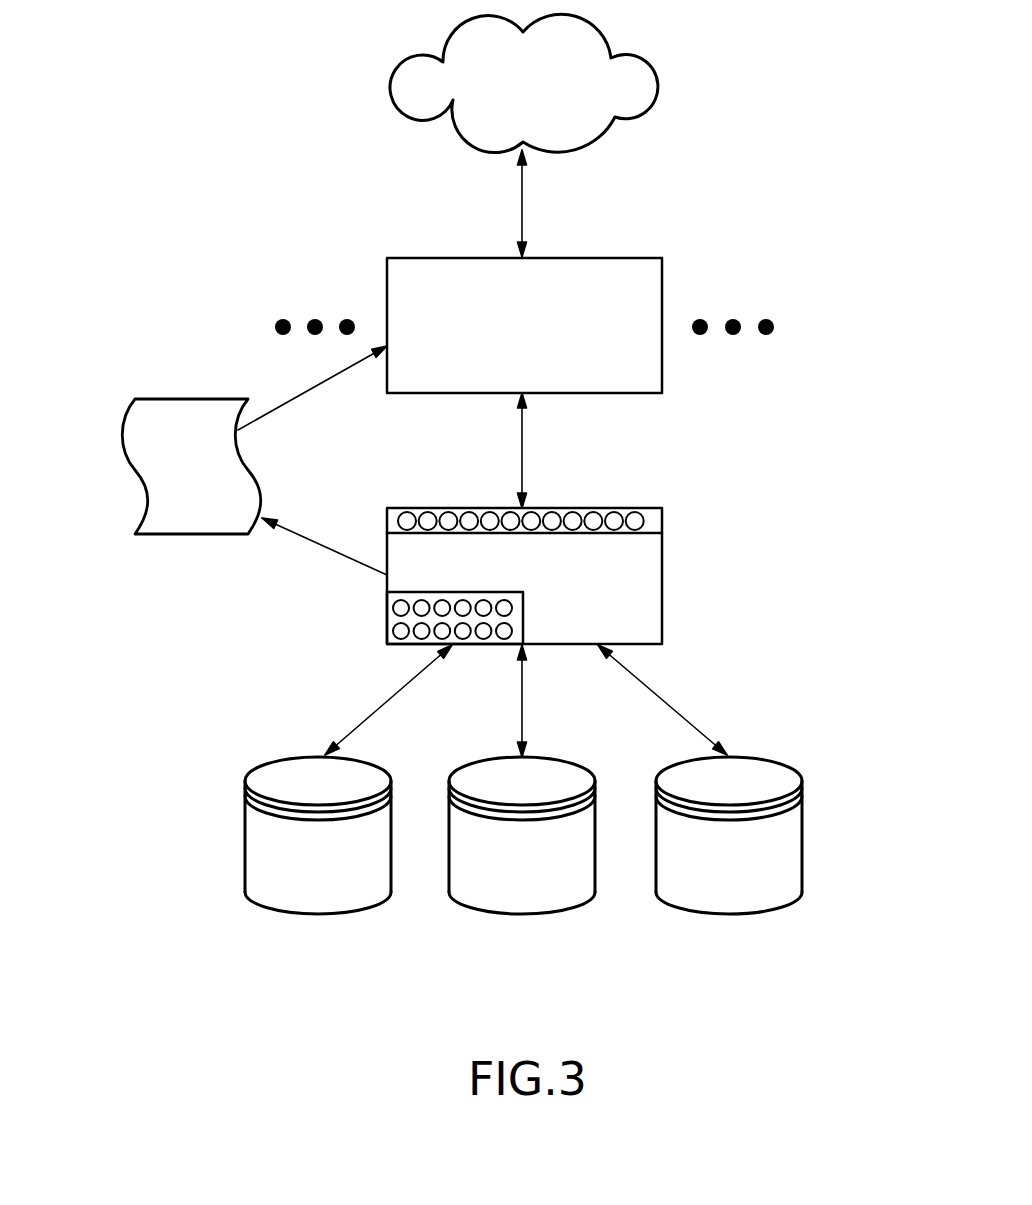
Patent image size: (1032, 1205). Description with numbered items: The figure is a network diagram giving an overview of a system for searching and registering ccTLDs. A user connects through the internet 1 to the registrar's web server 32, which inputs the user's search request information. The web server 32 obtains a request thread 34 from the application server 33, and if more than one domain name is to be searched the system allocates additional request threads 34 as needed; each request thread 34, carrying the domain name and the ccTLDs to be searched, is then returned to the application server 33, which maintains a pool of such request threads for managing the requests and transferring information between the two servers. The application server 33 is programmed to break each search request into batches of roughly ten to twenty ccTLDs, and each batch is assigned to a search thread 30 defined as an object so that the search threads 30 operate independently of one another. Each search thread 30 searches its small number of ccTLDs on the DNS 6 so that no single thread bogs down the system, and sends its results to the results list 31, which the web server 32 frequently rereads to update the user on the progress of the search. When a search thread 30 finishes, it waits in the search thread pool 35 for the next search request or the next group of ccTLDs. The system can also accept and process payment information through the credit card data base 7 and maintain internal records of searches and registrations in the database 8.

The internet 1 is at (657, 82).
The web server 32 is at (662, 275).
The results list 31 is at (135, 468).
The search thread 30 is at (519, 583).
The application server 33 is at (662, 575).
The request thread 34 is at (644, 521).
The search thread pool 35 is at (387, 618).
The Domain Name System (DNS) 6 is at (245, 885).
The credit card data base 7 is at (522, 913).
The database 8 is at (803, 885).